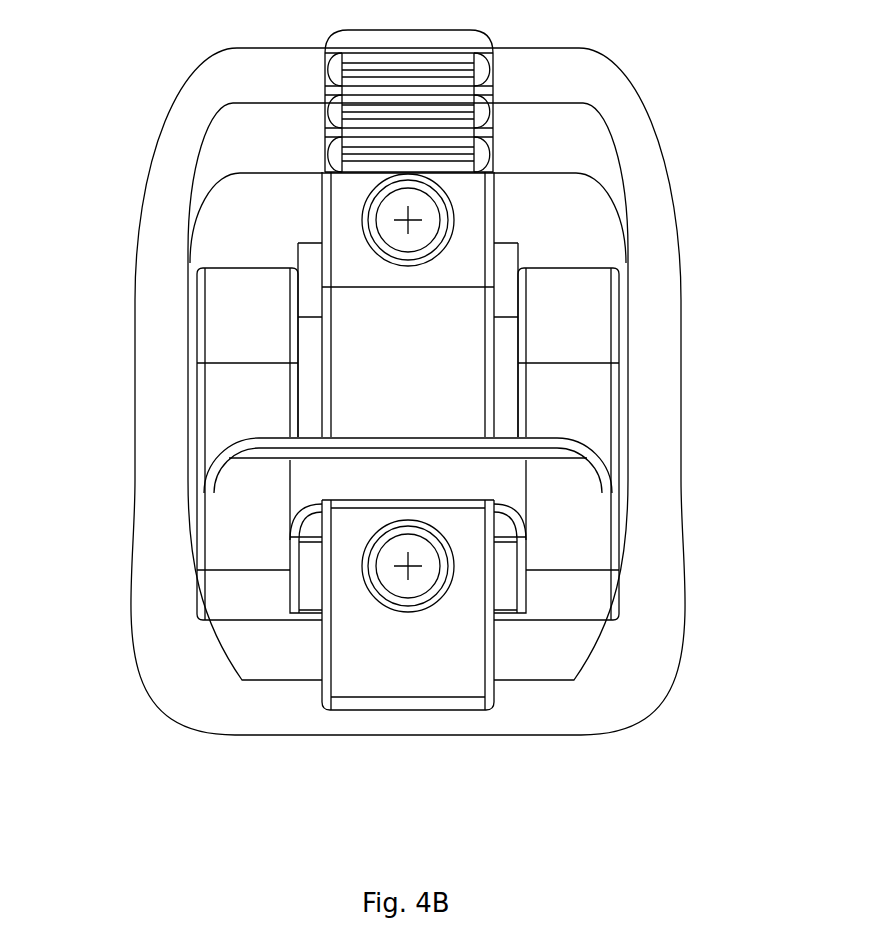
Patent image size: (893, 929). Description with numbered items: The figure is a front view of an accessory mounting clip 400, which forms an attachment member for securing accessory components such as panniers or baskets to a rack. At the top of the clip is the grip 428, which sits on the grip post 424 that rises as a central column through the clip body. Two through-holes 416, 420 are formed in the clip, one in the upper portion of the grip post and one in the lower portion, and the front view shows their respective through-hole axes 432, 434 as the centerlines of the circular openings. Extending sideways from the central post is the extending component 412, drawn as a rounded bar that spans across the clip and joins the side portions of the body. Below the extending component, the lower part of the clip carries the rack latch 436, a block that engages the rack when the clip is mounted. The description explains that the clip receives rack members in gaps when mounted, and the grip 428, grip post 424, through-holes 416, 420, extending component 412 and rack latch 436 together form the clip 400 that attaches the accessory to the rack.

The accessory mounting clip 400 is at (160, 293).
The extending component 412 is at (250, 502).
The through-hole 416 is at (438, 575).
The through-hole 420 is at (440, 226).
The grip post 424 is at (352, 188).
The grip 428 is at (435, 103).
The through-hole axis 432 is at (420, 210).
The through-hole axis 434 is at (422, 555).
The rack latch 436 is at (420, 662).